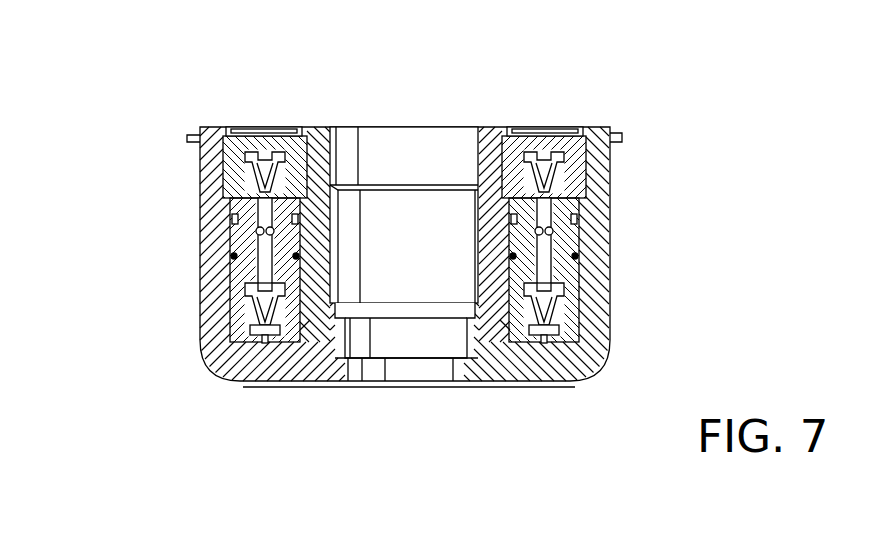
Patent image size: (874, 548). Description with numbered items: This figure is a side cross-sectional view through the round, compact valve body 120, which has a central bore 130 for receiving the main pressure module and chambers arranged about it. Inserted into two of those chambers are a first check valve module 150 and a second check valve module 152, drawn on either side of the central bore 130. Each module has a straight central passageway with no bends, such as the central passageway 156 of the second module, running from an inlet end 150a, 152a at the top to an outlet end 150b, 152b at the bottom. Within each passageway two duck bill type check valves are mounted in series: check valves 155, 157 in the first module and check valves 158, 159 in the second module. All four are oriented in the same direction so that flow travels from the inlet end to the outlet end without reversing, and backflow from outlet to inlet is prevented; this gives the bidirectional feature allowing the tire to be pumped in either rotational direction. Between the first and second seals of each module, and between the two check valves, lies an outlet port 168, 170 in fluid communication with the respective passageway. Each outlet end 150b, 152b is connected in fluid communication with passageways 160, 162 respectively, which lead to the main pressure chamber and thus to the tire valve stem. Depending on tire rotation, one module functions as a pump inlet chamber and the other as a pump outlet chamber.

The valve body 120 is at (610, 250).
The central bore 130 is at (403, 126).
The check valve module 150 is at (225, 188).
The inlet end 150a is at (262, 128).
The outlet end 150b is at (252, 337).
The check valve module 152 is at (603, 180).
The inlet end 152a is at (545, 140).
The outlet end 152b is at (558, 337).
The check valve 155 is at (275, 190).
The central passageway 156 is at (545, 265).
The check valve 157 is at (250, 313).
The check valve 158 is at (572, 200).
The check valve 159 is at (545, 312).
The passageway 160 is at (308, 315).
The passageway 162 is at (497, 307).
The outlet port 168 is at (548, 228).
The outlet port 170 is at (258, 231).